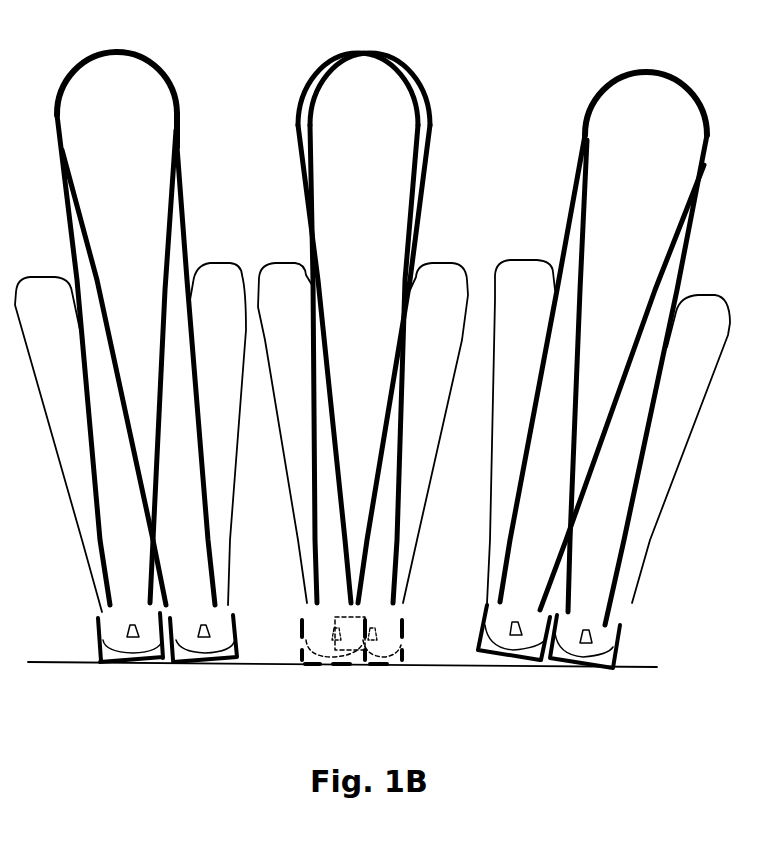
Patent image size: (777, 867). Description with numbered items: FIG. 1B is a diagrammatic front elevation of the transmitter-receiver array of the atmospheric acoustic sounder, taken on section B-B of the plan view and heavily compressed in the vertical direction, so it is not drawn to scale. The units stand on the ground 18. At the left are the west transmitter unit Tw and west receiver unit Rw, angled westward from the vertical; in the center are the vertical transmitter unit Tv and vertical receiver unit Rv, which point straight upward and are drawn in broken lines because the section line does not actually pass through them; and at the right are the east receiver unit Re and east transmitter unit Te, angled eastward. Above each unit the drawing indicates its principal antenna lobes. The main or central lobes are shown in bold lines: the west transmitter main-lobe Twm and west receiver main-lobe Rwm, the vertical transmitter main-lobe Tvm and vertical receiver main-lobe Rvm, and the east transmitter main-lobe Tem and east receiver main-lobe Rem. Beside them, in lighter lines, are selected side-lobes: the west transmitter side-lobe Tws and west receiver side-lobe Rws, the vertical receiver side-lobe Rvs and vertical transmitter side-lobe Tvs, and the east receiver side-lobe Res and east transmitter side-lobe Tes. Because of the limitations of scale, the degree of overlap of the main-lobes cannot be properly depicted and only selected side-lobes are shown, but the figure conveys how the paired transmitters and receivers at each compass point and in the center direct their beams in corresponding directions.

The ground 18 is at (640, 666).
The west transmitter main-lobe Twm is at (70, 241).
The west receiver main-lobe Rwm is at (187, 250).
The west transmitter side-lobe Tws is at (68, 319).
The west receiver side-lobe Rws is at (242, 319).
The west transmitter unit Tw is at (131, 668).
The west receiver unit Rw is at (215, 670).
The vertical transmitter main-lobe Tvm is at (302, 156).
The vertical receiver main-lobe Rvm is at (427, 169).
The vertical receiver side-lobe Rvs is at (298, 316).
The vertical transmitter side-lobe Tvs is at (455, 316).
The vertical receiver unit Rv is at (292, 633).
The vertical transmitter unit Tv is at (417, 627).
The east transmitter main-lobe Tem is at (562, 227).
The east receiver main-lobe Rem is at (687, 257).
The east receiver side-lobe Res is at (543, 314).
The east transmitter side-lobe Tes is at (715, 342).
The east receiver unit Re is at (523, 672).
The east transmitter unit Te is at (593, 674).